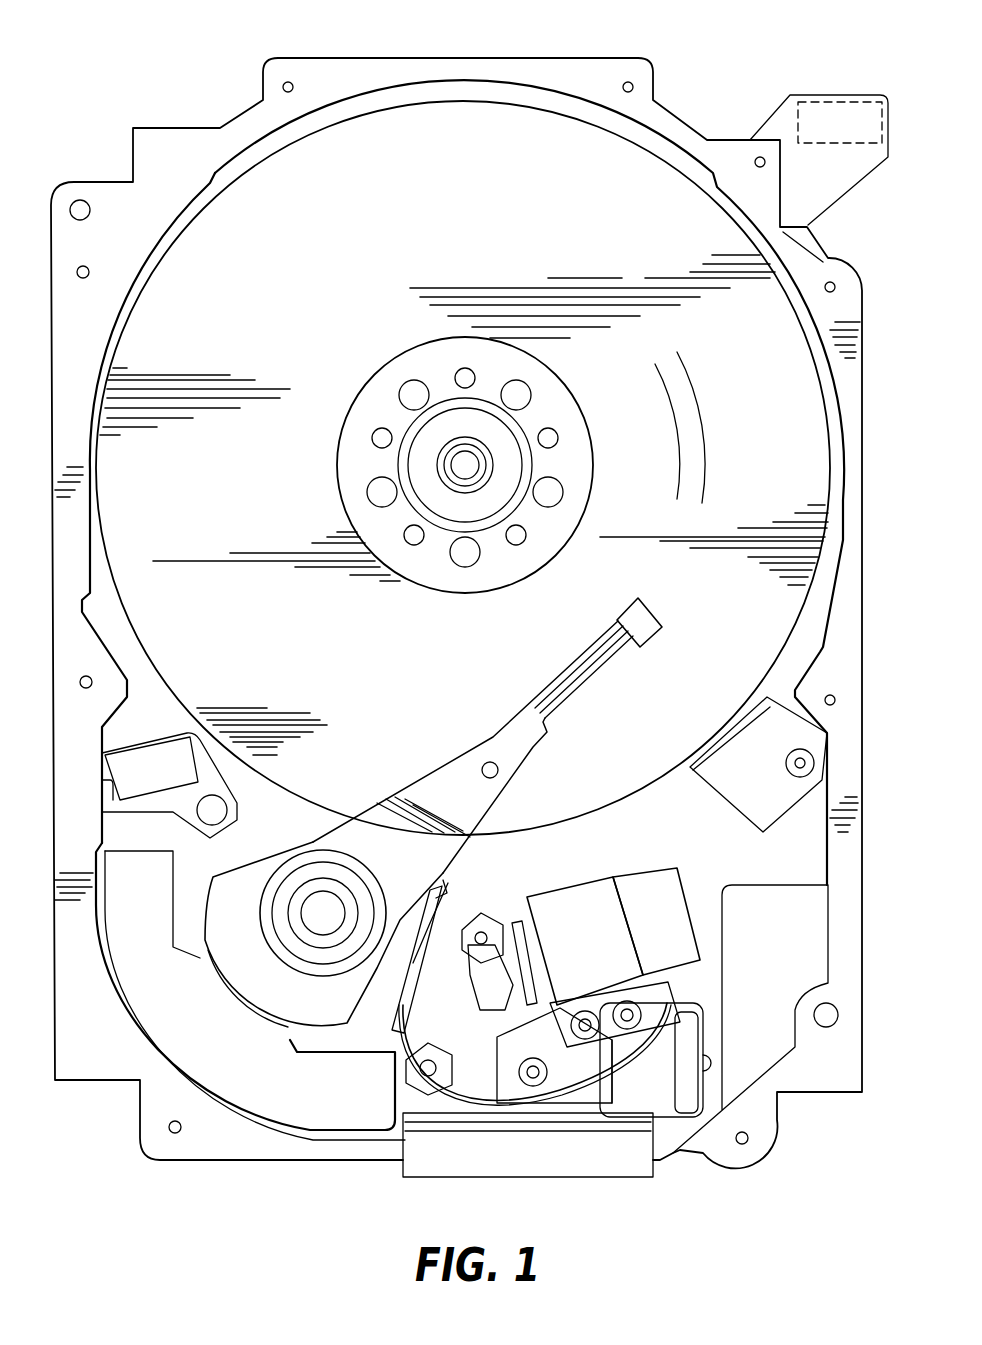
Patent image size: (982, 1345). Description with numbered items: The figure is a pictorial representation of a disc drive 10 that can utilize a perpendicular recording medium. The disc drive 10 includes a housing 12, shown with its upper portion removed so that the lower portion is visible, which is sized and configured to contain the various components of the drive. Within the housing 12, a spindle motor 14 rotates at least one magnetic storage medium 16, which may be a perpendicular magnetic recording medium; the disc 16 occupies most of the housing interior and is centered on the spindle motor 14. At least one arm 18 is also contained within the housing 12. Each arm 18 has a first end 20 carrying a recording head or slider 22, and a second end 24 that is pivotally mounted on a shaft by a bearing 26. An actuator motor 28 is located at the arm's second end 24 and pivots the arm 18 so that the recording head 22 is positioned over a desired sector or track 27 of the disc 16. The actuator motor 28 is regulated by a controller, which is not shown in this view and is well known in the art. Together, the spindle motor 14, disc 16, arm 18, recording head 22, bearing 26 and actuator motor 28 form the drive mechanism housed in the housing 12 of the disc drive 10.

The disc drive 10 is at (110, 112).
The housing 12 is at (607, 70).
The spindle motor 14 is at (460, 472).
The magnetic storage medium 16 is at (368, 248).
The arm 18 is at (453, 782).
The first end 20 is at (580, 660).
The recording head 22 is at (647, 612).
The second end 24 is at (352, 847).
The bearing 26 is at (313, 905).
The track 27 is at (693, 438).
The actuator motor 28 is at (184, 1044).